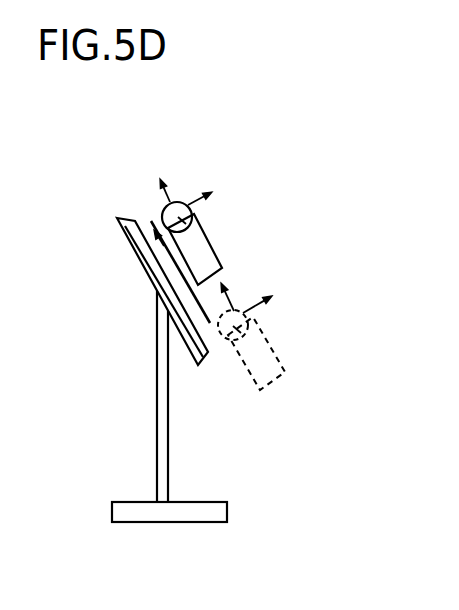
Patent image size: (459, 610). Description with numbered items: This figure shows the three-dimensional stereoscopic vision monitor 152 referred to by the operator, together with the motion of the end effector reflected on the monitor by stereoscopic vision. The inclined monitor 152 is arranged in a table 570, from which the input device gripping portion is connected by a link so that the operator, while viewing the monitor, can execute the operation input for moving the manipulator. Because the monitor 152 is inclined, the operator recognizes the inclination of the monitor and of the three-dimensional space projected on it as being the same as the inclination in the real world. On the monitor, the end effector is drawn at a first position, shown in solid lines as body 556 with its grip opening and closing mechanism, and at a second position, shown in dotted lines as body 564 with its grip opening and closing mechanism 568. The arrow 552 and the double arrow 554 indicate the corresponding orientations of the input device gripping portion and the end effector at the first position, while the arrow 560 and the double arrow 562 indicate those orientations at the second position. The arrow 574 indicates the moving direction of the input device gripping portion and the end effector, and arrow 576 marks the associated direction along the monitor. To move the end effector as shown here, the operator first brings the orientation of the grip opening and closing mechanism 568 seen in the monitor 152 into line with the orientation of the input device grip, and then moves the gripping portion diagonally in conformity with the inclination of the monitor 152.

The three-dimensional stereoscopic vision monitor 152 is at (150, 258).
The arrow 552 is at (161, 179).
The double arrow 554 is at (212, 192).
The light source unit 556 is at (194, 223).
The arrow 560 is at (221, 283).
The double arrow 562 is at (272, 296).
The virtual image of light source unit 564 is at (240, 331).
The grip opening and closing mechanism 568 is at (226, 305).
The table 570 is at (163, 456).
The arrow 574 is at (153, 230).
The reflected light ray 576 is at (162, 200).